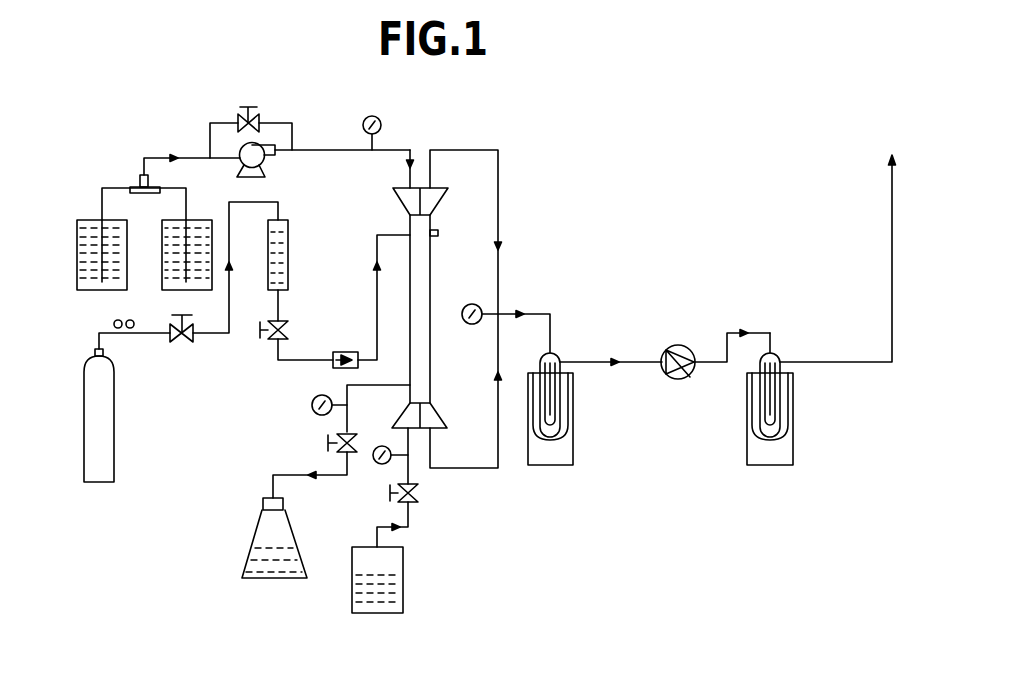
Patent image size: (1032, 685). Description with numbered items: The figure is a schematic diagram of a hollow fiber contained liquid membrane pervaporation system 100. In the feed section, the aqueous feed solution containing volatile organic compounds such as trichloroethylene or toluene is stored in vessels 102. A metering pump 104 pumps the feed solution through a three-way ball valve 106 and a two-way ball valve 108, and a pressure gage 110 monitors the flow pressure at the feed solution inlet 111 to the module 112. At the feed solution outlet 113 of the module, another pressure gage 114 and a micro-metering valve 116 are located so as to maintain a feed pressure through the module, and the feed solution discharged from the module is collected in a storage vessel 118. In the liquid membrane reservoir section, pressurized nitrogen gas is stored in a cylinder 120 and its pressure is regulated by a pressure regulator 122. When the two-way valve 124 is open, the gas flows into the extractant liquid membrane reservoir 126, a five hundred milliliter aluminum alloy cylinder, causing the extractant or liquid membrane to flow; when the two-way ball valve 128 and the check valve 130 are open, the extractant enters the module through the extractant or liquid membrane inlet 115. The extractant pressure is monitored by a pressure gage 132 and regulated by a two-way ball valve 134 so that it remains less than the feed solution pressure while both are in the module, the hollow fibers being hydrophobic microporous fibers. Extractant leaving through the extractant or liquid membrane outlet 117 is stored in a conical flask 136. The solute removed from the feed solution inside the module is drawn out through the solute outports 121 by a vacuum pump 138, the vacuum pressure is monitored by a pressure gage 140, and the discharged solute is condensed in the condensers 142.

The hollow fiber contained liquid membrane pervaporation system 100 is at (538, 185).
The vessels 102 is at (97, 290).
The metering pump 104 is at (262, 163).
The three-way ball valve 106 is at (142, 177).
The two-way ball valve 108 is at (246, 106).
The pressure gage 110 is at (380, 118).
The feed solution inlet 111 is at (410, 187).
The module 112 is at (433, 310).
The feed solution outlet 113 is at (403, 428).
The pressure gage 114 is at (375, 464).
The extractant or liquid membrane inlet 115 is at (408, 235).
The micro-metering valve 116 is at (418, 505).
The extractant or liquid membrane outlet 117 is at (387, 385).
The storage vessel 118 is at (373, 615).
The cylinder 120 is at (114, 453).
The solute outports 121 is at (438, 187).
The pressure regulator 122 is at (112, 323).
The two-way valve 124 is at (182, 344).
The extractant liquid membrane reservoir 126 is at (288, 247).
The two-way ball valve 128 is at (290, 332).
The check valve 130 is at (340, 352).
The pressure gage 132 is at (313, 400).
The two-way ball valve 134 is at (328, 450).
The conical flask 136 is at (250, 555).
The vacuum pump 138 is at (688, 344).
The pressure gage 140 is at (479, 305).
The condensers 142 is at (567, 466).